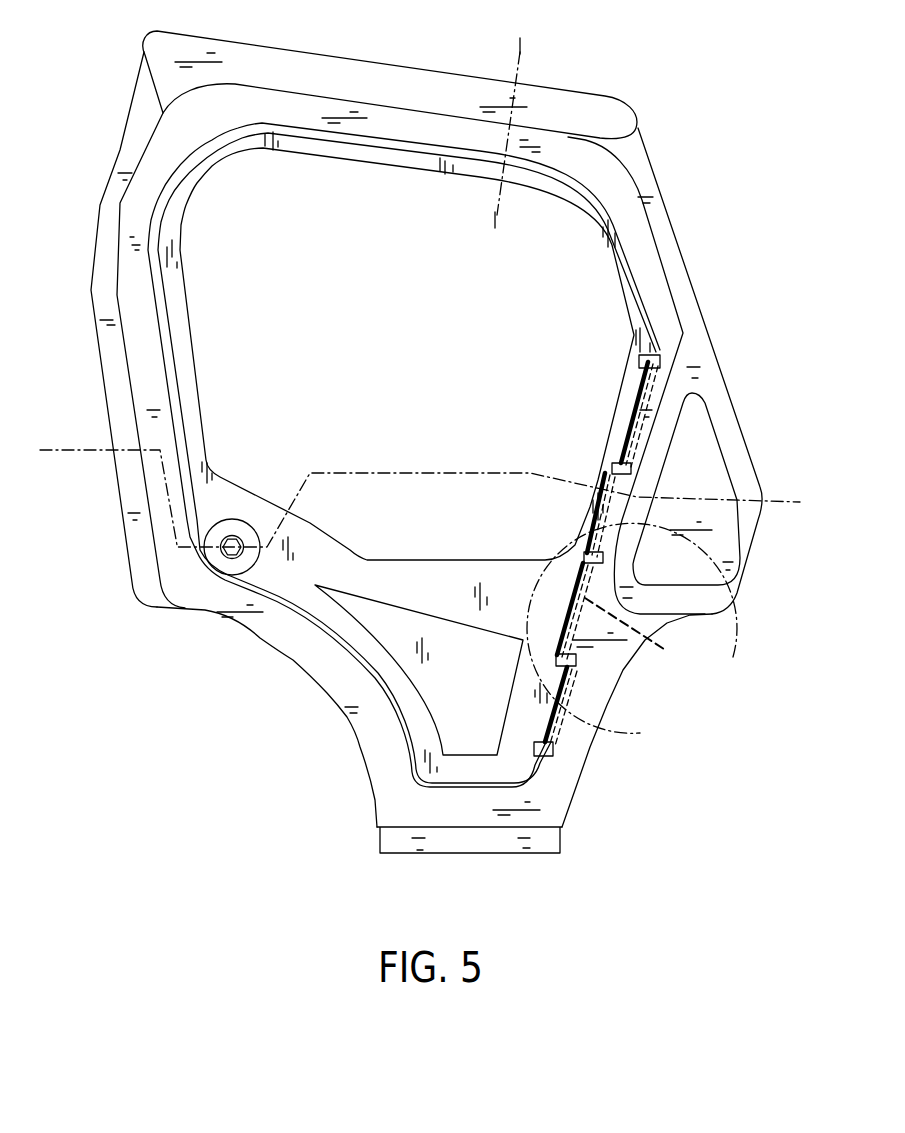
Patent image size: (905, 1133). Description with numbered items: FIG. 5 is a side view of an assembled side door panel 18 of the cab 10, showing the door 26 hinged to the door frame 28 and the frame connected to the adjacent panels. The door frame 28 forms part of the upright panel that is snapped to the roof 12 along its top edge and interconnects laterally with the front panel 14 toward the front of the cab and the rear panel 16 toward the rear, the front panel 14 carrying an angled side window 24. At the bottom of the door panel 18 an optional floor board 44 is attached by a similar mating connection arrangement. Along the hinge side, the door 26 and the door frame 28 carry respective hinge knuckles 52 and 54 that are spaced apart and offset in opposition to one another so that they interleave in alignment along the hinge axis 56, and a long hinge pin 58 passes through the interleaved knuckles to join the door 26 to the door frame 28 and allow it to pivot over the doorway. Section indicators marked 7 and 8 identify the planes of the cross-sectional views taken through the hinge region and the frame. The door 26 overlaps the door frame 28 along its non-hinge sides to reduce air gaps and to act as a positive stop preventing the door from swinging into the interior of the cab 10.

The roof 12 is at (344, 57).
The section line 8- 8 is at (560, 47).
The rear panel 16 is at (90, 282).
The door frame 28 is at (141, 377).
The side door panel 18 is at (259, 621).
The floor board 44 is at (472, 863).
The front panel 14 is at (708, 339).
The angled side window 24 is at (711, 458).
The door 26 is at (195, 375).
The hinge knuckle 52 is at (595, 527).
The hinge knuckle 54 is at (655, 389).
The hinge axis 56 is at (549, 757).
The hinge pin 58 is at (640, 635).
The cab 10 is at (642, 733).
The section line 7- 7 is at (57, 400).